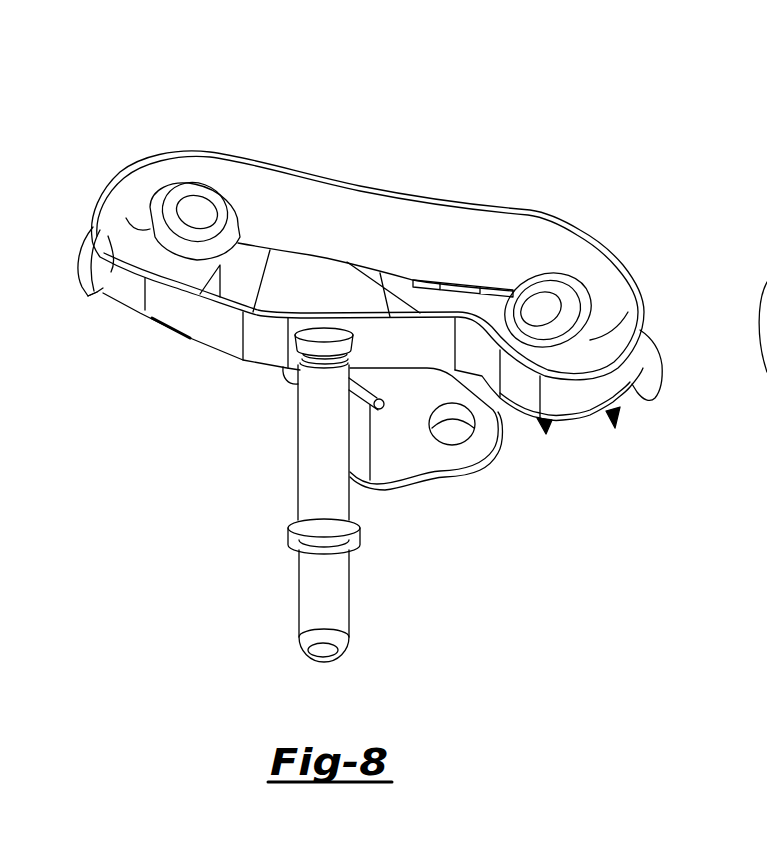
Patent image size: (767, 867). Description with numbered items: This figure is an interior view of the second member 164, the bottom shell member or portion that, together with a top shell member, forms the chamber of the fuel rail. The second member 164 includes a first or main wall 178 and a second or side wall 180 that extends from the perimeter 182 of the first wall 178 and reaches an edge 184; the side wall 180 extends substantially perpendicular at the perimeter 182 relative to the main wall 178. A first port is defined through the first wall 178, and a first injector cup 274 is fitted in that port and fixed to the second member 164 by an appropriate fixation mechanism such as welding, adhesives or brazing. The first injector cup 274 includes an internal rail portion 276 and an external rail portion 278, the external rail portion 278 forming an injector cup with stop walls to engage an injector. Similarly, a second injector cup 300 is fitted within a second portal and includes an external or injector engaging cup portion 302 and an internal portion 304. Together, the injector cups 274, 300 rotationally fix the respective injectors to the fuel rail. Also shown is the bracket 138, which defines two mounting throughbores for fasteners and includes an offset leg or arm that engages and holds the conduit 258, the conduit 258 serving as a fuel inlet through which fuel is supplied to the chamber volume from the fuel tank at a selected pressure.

The bracket 138 is at (326, 138).
The second member 164 is at (210, 140).
The first wall 178 is at (447, 302).
The side wall 180 is at (530, 229).
The perimeter 182 is at (517, 284).
The edge 184 is at (452, 285).
The conduit 258 is at (307, 502).
The first injector cup 274 is at (612, 420).
The internal rail portion 276 is at (592, 340).
The external rail portion 278 is at (648, 382).
The second injector cup 300 is at (72, 304).
The injector engaging cup portion 302 is at (90, 298).
The internal portion 304 is at (126, 218).